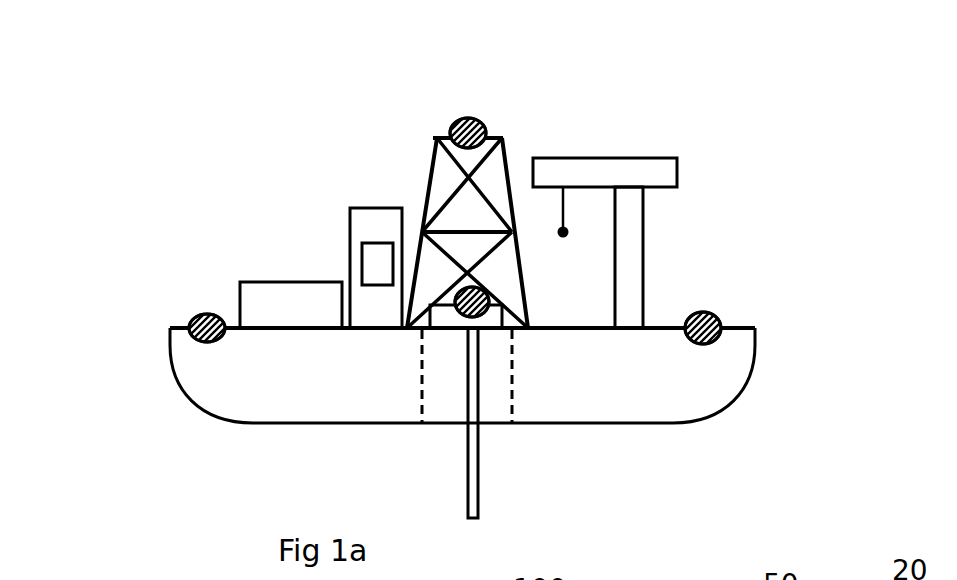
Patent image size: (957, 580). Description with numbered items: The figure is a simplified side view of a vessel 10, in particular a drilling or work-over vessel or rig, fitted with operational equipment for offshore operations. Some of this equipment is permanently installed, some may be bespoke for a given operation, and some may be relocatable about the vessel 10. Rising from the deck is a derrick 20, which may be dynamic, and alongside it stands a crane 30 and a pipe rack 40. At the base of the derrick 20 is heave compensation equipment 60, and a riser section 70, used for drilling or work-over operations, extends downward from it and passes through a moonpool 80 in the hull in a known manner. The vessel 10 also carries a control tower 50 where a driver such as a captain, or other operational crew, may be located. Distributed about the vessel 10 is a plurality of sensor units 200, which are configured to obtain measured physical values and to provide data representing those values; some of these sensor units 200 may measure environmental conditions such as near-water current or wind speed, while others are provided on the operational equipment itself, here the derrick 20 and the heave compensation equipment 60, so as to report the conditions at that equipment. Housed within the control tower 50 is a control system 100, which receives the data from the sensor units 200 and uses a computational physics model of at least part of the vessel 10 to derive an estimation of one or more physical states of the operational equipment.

The vessel 10 is at (773, 208).
The derrick 20 is at (443, 190).
The crane 30 is at (628, 212).
The pipe rack 40 is at (295, 303).
The control tower 50 is at (377, 232).
The control system 100 is at (378, 263).
The heave compensation equipment 60 is at (516, 335).
The riser section 70 is at (480, 480).
The moonpool 80 is at (400, 425).
The sensor units 200 is at (208, 315).